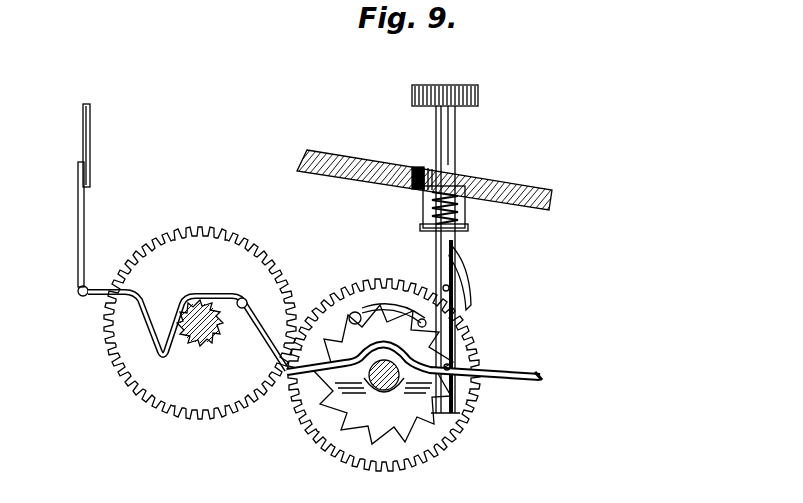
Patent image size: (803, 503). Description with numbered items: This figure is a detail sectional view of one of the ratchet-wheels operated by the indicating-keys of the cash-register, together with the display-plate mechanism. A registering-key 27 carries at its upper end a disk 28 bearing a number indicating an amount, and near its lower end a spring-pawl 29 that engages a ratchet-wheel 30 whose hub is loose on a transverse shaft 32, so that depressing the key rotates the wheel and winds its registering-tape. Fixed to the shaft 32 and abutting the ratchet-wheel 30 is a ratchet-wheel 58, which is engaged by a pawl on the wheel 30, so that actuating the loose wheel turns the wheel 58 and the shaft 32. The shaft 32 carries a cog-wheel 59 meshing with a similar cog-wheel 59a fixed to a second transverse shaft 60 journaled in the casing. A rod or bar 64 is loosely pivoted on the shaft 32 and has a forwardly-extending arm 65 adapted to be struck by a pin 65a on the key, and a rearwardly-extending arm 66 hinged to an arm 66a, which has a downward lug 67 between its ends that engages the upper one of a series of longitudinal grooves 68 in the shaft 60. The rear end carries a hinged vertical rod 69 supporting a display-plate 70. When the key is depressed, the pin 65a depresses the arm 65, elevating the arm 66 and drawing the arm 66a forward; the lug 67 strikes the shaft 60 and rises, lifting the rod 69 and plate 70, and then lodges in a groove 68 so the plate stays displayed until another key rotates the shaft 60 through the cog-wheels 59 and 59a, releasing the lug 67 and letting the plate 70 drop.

The registering-key 27 is at (424, 259).
The disk 28 is at (455, 84).
The spring-pawl 29 is at (466, 316).
The ratchet-wheel 30 is at (428, 425).
The transverse shaft 32 is at (407, 385).
The ratchet-wheel 58 is at (373, 406).
The cog-wheel 59 is at (352, 320).
The cog-wheel 59a is at (225, 450).
The transverse shaft 60 is at (220, 334).
The rod or bar 64 is at (360, 380).
The forwardly-extending arm 65 is at (414, 362).
The pin 65a is at (565, 328).
The rearwardly-extending arm 66 is at (285, 425).
The arm 66a is at (230, 281).
The lug 67 is at (162, 376).
The longitudinal groove 68 is at (210, 340).
The vertical rod 69 is at (96, 229).
The display-plate 70 is at (101, 145).